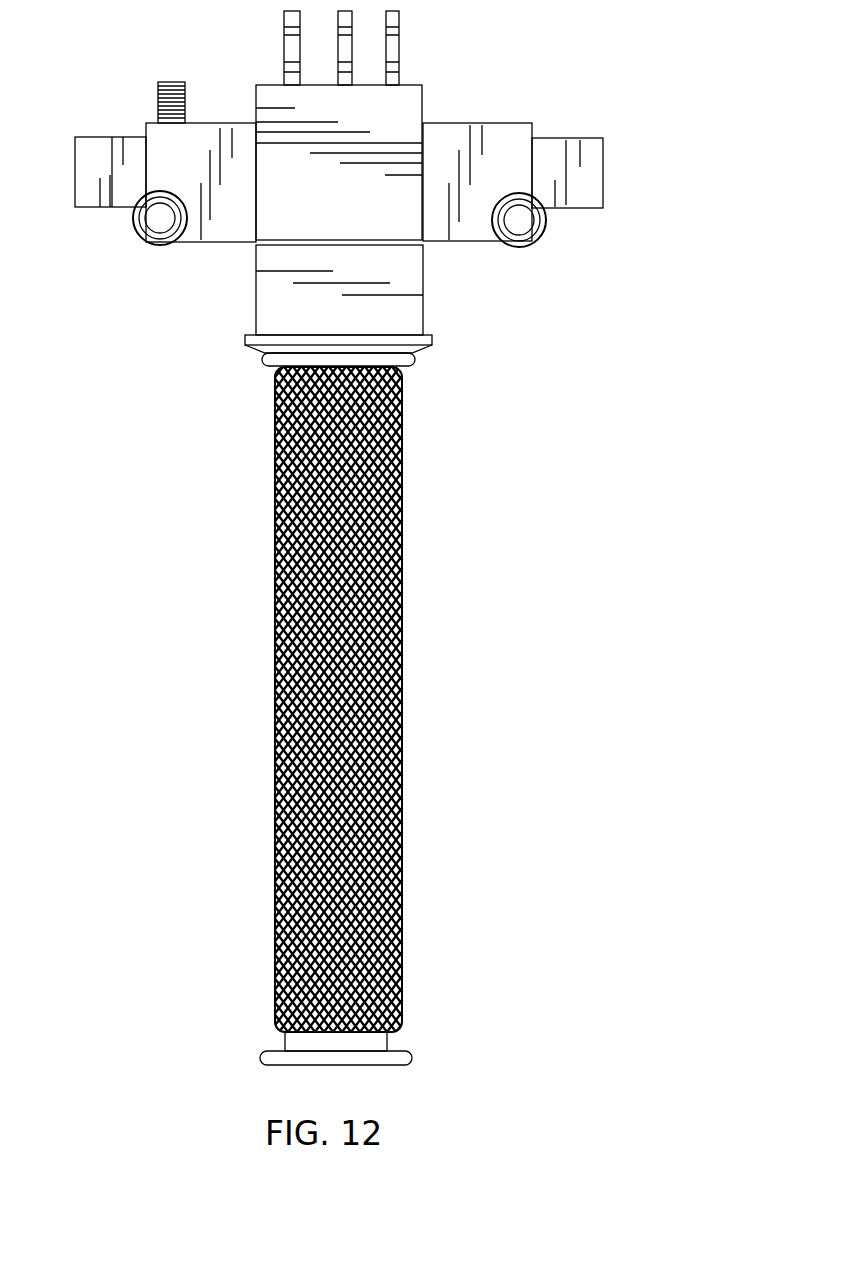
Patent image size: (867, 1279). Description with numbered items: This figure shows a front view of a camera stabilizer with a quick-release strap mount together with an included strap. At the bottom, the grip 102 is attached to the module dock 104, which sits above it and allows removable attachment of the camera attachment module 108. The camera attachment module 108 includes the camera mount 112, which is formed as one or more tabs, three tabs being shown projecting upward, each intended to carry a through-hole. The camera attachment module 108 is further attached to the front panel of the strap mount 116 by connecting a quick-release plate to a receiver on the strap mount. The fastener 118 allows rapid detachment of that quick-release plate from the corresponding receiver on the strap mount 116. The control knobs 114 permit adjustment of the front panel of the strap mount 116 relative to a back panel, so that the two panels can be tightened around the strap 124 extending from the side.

The grip 102 is at (402, 628).
The module dock 104 is at (423, 283).
The camera attachment module 108 is at (422, 88).
The camera mount 112 is at (399, 43).
The control knobs 114 is at (133, 228).
The strap mount 116 is at (532, 123).
The fastener 118 is at (158, 100).
The strap 124 is at (603, 170).